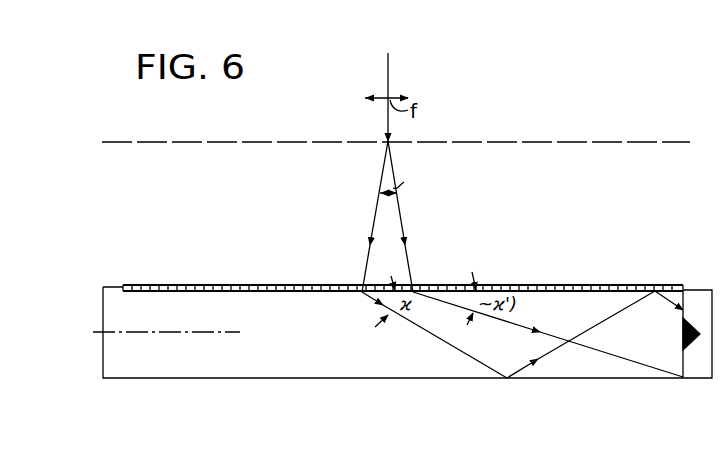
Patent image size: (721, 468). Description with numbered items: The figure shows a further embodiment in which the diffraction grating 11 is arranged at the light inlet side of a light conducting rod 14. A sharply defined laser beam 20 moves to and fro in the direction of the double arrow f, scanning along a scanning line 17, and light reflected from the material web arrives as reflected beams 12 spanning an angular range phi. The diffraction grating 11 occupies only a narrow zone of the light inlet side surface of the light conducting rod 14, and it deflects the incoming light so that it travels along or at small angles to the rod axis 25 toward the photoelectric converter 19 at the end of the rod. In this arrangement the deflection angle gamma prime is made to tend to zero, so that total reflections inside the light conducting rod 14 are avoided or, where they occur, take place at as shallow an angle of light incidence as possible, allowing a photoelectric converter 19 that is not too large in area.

The laser beam 20 is at (388, 80).
The scanning line 17 is at (530, 142).
The reflected beams 12 is at (373, 228).
The diffraction grating 11 is at (563, 262).
The light conducting rod 14 is at (332, 372).
The rod axis 25 is at (166, 334).
The photoelectric converter 19 is at (704, 373).